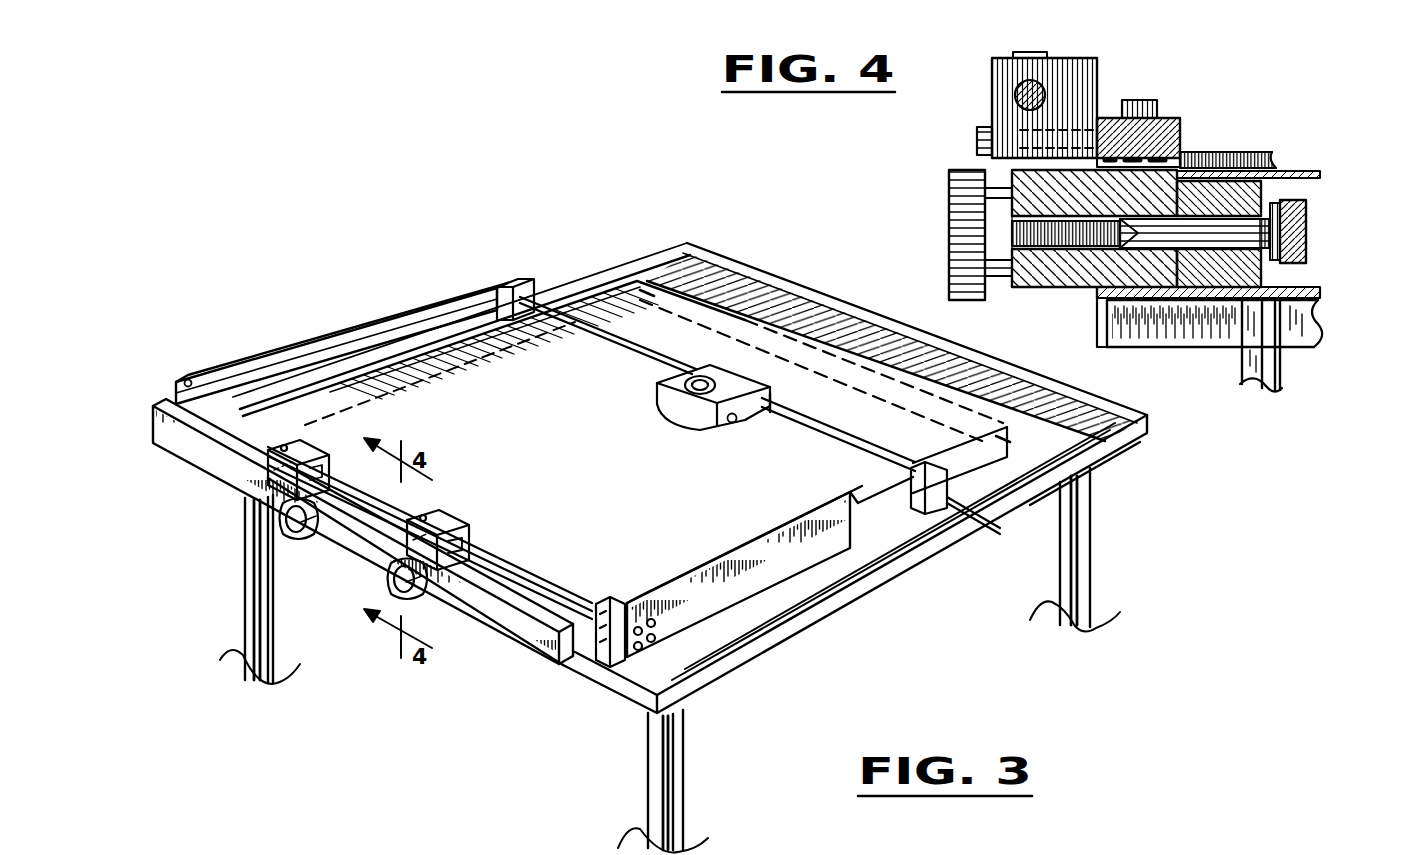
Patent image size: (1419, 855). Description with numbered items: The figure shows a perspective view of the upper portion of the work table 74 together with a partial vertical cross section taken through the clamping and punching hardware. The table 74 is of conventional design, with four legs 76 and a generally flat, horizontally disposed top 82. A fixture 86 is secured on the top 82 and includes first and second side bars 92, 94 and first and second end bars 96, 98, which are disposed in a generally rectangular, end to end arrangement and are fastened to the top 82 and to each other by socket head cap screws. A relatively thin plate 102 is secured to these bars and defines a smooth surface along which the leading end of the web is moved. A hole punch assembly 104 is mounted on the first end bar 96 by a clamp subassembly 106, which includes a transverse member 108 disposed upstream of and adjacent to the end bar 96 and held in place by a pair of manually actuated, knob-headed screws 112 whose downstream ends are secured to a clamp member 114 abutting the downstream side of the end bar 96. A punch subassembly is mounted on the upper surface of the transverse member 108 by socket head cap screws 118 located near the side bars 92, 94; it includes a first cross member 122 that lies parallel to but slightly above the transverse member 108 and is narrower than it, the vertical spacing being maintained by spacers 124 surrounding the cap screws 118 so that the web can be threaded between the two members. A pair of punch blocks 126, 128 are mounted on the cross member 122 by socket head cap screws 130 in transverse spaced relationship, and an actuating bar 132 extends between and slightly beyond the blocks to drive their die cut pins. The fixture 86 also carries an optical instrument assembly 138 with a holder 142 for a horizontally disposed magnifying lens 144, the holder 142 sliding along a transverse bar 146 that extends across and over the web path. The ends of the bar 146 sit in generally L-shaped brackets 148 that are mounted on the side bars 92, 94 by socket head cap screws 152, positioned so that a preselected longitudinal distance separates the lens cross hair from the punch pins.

In FIG. 3, the table 74 is at (649, 242).
In FIG. 4, the table 74 is at (1312, 320).
In FIG. 3, the legs 76 is at (246, 622).
In FIG. 4, the legs 76 is at (1282, 373).
In FIG. 3, the top 82 is at (1140, 441).
In FIG. 4, the top 82 is at (1312, 286).
In FIG. 3, the fixture 86 is at (366, 343).
In FIG. 3, the first side bar 92 is at (758, 588).
In FIG. 3, the second side bar 94 is at (590, 292).
In FIG. 4, the second side bar 94 is at (1256, 151).
In FIG. 4, the first end bar 96 is at (1263, 189).
In FIG. 3, the second end bar 98 is at (725, 323).
In FIG. 3, the plate 102 is at (678, 512).
In FIG. 4, the plate 102 is at (1290, 172).
In FIG. 4, the hole punch assembly 104 is at (924, 150).
In FIG. 4, the clamp subassembly 106 is at (932, 235).
In FIG. 3, the transverse member 108 is at (546, 652).
In FIG. 4, the transverse member 108 is at (1071, 290).
In FIG. 3, the knob-headed screws 112 is at (290, 534).
In FIG. 4, the knob-headed screws 112 is at (966, 201).
In FIG. 4, the clamp member 114 is at (1307, 247).
In FIG. 3, the socket head cap screws 118 is at (186, 378).
In FIG. 4, the socket head cap screws 118 is at (1151, 101).
In FIG. 3, the first cross member 122 is at (512, 556).
In FIG. 4, the first cross member 122 is at (1181, 123).
In FIG. 4, the spacers 124 is at (1226, 152).
In FIG. 3, the punch block 126 is at (462, 517).
In FIG. 3, the punch block 128 is at (236, 470).
In FIG. 4, the punch block 128 is at (1097, 64).
In FIG. 3, the socket head cap screws 130 is at (262, 506).
In FIG. 4, the socket head cap screws 130 is at (979, 128).
In FIG. 4, the actuating bar 132 is at (1017, 93).
In FIG. 3, the optical instrument assembly 138 is at (648, 399).
In FIG. 3, the holder 142 is at (746, 416).
In FIG. 3, the magnifying lens 144 is at (672, 406).
In FIG. 3, the transverse bar 146 is at (846, 432).
In FIG. 3, the L-shaped brackets 148 is at (510, 284).
In FIG. 3, the socket head cap screws 152 is at (996, 531).